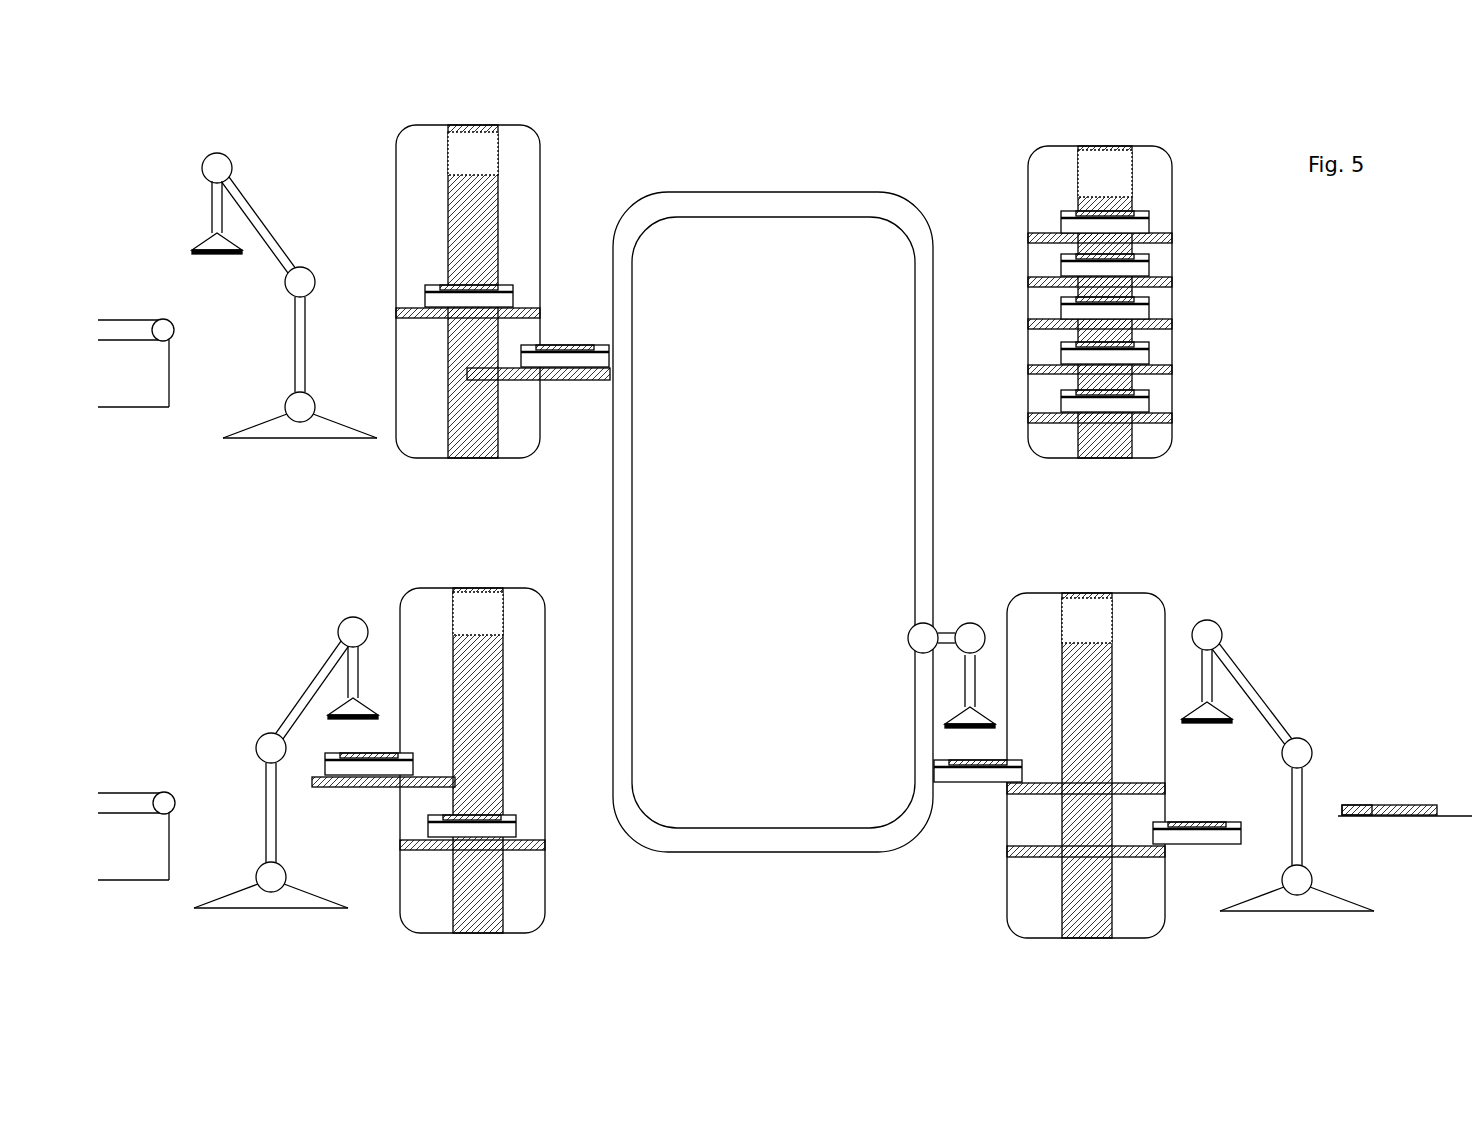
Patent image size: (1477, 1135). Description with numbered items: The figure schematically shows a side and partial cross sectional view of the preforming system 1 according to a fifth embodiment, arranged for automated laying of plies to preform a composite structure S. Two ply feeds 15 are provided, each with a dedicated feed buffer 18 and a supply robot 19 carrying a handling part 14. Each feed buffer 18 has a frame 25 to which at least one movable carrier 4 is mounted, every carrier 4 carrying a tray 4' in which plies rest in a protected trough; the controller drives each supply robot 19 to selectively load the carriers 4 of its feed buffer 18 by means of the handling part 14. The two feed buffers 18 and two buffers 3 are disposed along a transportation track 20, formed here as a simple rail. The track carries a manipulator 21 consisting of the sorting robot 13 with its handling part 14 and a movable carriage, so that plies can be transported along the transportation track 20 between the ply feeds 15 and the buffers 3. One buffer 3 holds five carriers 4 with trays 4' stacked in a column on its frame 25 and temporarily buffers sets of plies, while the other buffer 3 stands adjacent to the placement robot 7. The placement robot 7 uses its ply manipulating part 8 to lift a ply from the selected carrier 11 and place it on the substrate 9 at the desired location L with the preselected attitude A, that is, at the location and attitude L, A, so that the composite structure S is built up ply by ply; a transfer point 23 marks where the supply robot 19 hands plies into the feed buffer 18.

The preforming system 1 is at (182, 87).
The buffer 3 is at (1099, 145).
The carrier 4 is at (790, 553).
The tray 4' is at (781, 524).
The placement robot 7 is at (1255, 687).
The ply manipulating part 8 is at (1237, 720).
The substrate 9 is at (1455, 815).
The selected carrier 11 is at (1171, 851).
The sorting robot 13 is at (967, 622).
The handling part 14 is at (197, 246).
The ply feed 15 is at (127, 312).
The feed buffer 18 is at (467, 124).
The supply robot 19 is at (263, 223).
The transportation track 20 is at (862, 190).
The manipulator 21 is at (907, 591).
The transfer station 23 is at (383, 594).
The frame 25 is at (486, 169).
The composite structure S is at (1403, 803).
The layer / workpiece L, A is at (1350, 803).